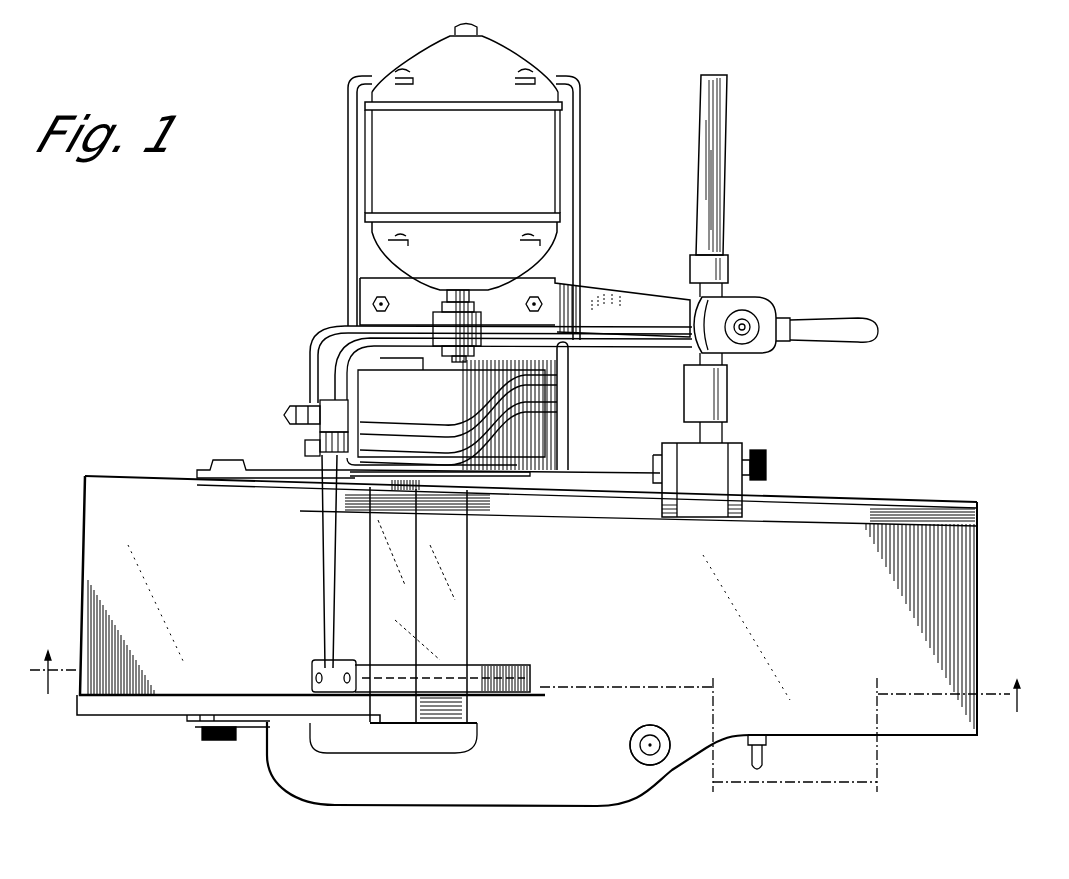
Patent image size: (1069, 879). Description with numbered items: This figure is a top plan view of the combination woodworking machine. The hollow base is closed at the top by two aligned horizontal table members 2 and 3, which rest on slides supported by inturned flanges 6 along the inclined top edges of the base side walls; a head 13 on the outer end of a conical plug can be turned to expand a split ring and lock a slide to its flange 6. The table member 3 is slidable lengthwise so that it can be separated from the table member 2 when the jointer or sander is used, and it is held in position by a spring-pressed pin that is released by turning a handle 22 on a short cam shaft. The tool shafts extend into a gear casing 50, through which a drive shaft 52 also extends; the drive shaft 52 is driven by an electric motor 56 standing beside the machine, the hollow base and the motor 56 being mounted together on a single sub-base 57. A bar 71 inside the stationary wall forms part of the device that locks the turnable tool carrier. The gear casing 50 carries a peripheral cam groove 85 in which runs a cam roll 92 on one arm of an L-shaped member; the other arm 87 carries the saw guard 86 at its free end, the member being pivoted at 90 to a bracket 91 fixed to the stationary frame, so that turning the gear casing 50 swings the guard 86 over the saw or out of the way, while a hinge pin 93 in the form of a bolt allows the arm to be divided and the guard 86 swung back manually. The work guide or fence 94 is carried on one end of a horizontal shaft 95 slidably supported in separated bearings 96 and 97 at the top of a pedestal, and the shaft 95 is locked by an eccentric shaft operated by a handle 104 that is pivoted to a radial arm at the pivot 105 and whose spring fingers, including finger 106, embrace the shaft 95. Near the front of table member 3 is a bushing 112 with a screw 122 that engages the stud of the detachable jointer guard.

The table member 2 is at (527, 599).
The table member 3 is at (840, 618).
The inturned flange 6 is at (526, 721).
The head 13 is at (215, 740).
The handle 22 is at (766, 762).
The gear casing 50 is at (451, 417).
The drive shaft 52 is at (470, 297).
The electric motor 56 is at (463, 157).
The sub-base 57 is at (580, 248).
The bar 71 is at (425, 490).
The peripheral cam groove 85 is at (400, 442).
The saw guard 86 is at (512, 668).
The arm 87 is at (320, 607).
The pivot 90 is at (290, 416).
The bracket 91 is at (309, 360).
The cam roll 92 is at (350, 447).
The hinge pin 93 is at (305, 448).
The work guide or fence 94 is at (832, 510).
The horizontal shaft 95 is at (724, 216).
The bearing 96 is at (722, 400).
The bearing 97 is at (720, 276).
The handle 104 is at (850, 322).
The clamping screw 105 is at (762, 323).
The spring finger 106 is at (725, 305).
The bushing 112 is at (662, 738).
The screw 122 is at (652, 752).